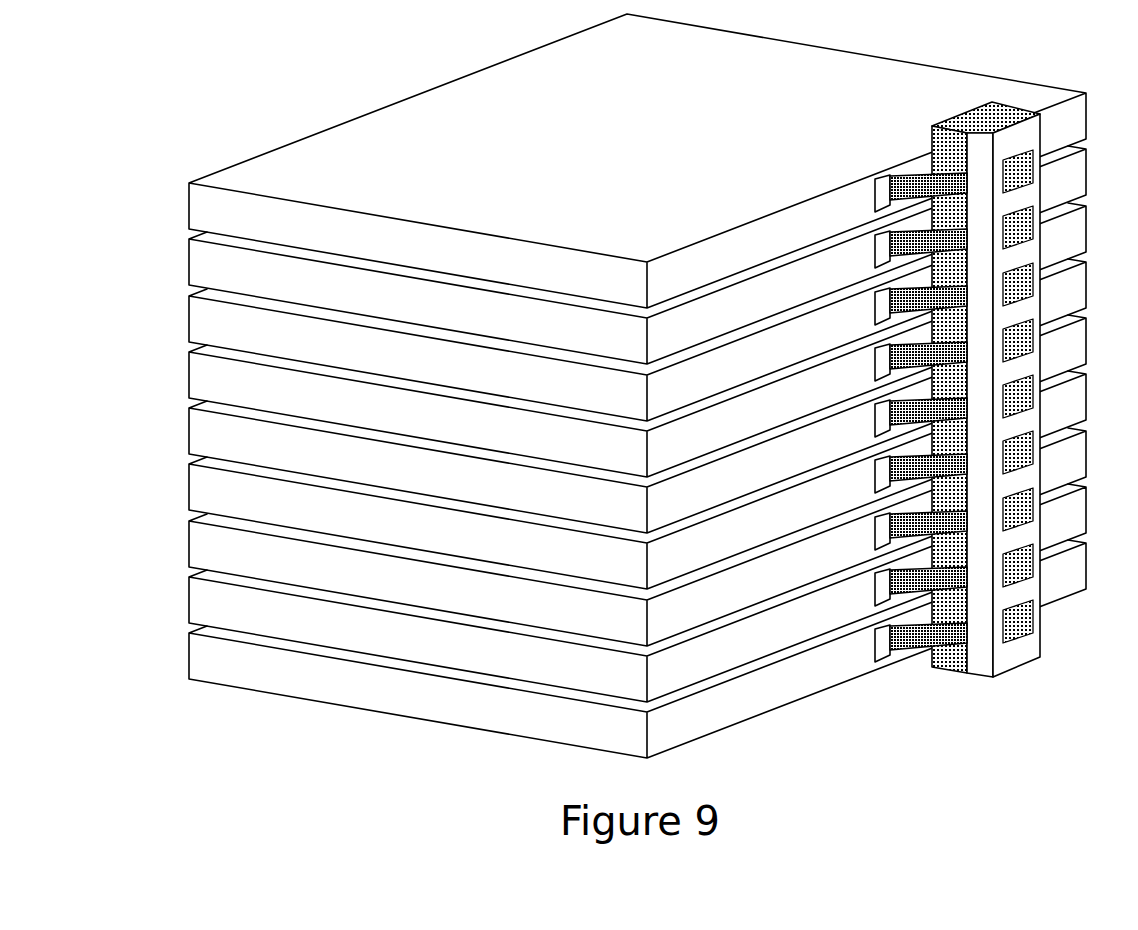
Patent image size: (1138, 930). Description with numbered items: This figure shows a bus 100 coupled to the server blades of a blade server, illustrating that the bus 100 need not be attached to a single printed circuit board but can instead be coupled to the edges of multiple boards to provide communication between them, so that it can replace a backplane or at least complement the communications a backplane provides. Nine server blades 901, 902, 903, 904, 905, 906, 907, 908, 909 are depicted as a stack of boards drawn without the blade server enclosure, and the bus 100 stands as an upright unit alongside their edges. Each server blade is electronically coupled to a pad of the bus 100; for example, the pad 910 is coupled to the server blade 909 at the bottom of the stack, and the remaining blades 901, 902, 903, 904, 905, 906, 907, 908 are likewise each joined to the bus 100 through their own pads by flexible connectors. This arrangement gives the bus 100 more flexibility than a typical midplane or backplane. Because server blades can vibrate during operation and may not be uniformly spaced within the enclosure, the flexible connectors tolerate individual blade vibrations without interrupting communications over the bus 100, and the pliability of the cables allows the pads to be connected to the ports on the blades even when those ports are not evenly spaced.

The bus 100 is at (1006, 104).
The server blade 901 is at (190, 205).
The server blade 902 is at (190, 261).
The server blade 903 is at (190, 318).
The server blade 904 is at (190, 374).
The server blade 905 is at (190, 430).
The server blade 906 is at (190, 486).
The server blade 907 is at (190, 543).
The server blade 908 is at (190, 599).
The server blade 909 is at (190, 655).
The pad 910 is at (885, 656).